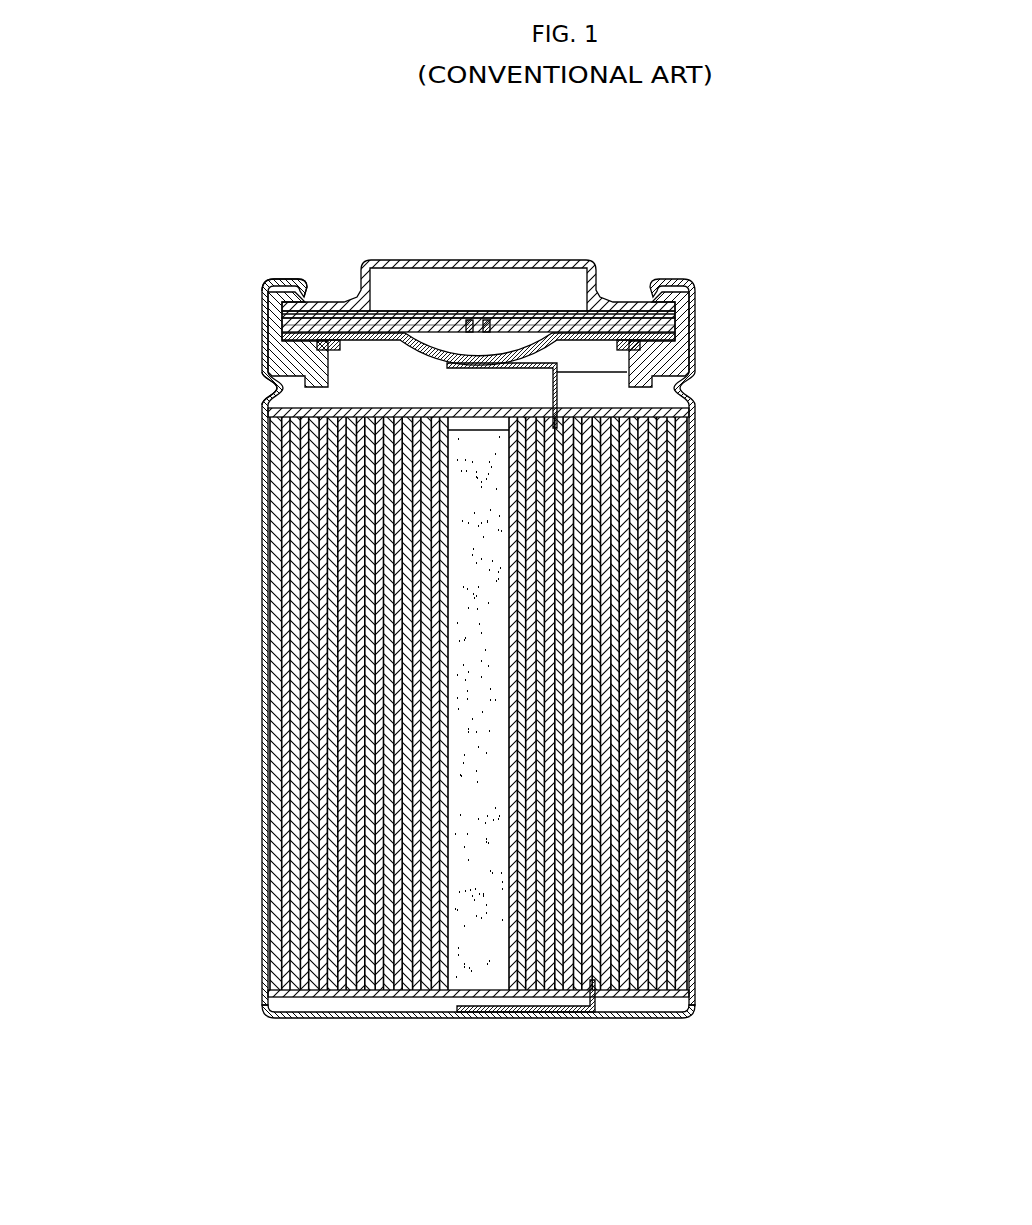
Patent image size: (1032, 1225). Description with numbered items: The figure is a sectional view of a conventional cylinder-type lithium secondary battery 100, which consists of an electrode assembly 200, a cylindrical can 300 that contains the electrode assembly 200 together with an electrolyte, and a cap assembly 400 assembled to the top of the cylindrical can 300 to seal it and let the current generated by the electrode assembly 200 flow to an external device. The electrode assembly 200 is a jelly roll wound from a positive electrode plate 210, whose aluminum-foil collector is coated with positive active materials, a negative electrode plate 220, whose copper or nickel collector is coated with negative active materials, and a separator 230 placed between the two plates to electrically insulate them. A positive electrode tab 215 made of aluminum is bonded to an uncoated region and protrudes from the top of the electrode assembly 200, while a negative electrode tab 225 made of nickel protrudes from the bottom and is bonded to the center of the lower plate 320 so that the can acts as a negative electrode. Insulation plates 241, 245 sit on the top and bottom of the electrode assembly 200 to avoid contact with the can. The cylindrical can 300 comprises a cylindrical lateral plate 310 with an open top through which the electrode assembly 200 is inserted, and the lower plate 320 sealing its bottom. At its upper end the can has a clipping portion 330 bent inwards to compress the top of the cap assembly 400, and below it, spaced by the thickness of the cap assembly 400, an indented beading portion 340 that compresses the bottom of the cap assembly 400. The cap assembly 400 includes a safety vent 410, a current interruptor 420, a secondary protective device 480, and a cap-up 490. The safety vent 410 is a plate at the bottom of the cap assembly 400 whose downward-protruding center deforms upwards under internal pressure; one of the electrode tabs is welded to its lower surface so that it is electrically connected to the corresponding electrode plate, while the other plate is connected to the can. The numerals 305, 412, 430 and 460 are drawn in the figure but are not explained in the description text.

The cylinder-type lithium secondary battery 100 is at (728, 234).
The electrode assembly 200 is at (823, 388).
The positive electrode plate 210 is at (658, 553).
The positive electrode tab 215 is at (675, 383).
The negative electrode plate 220 is at (677, 465).
The negative electrode tab 225 is at (583, 1022).
The separator 230 is at (665, 518).
The insulation plate 241 is at (688, 408).
The insulation plate 245 is at (677, 1000).
The cylindrical can 300 is at (128, 360).
The opening of can 305 is at (264, 290).
The cylindrical lateral plate 310 is at (263, 458).
The lower plate 320 is at (292, 1022).
The clipping portion 330 is at (262, 286).
The beading portion 340 is at (262, 388).
The cap assembly 400 is at (385, 163).
The safety vent 410 is at (402, 316).
The insulating gasket 412 is at (622, 300).
The current interruptor 420 is at (546, 318).
The safety vent 430 is at (487, 320).
The current interrupt device 460 is at (470, 318).
The secondary protective device 480 is at (577, 311).
The cap-up 490 is at (364, 272).